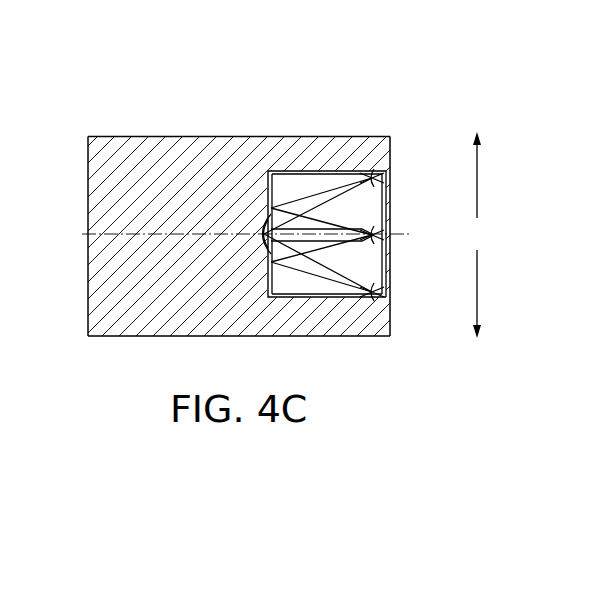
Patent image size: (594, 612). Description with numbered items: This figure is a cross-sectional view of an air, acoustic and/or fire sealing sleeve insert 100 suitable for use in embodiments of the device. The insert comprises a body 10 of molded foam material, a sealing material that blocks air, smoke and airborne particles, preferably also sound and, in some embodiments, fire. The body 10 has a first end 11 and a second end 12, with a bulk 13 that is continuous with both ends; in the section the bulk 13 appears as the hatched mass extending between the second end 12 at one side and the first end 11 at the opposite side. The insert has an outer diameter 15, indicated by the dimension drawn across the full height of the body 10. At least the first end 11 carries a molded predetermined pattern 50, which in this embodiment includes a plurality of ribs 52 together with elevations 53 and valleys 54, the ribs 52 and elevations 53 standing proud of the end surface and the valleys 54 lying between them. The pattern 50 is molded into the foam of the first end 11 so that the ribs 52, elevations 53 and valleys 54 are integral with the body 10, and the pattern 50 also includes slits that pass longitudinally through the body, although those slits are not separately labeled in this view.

The air, acoustic and/or fire sealing sleeve insert 100 is at (107, 106).
The body 10 is at (148, 336).
The first end 11 is at (392, 322).
The second end 12 is at (88, 280).
The bulk 13 is at (195, 167).
The outer diameter 15 is at (478, 235).
The molded predetermined pattern 50 is at (413, 205).
The ribs 52 is at (334, 254).
The elevations 53 is at (354, 285).
The valleys 54 is at (367, 202).